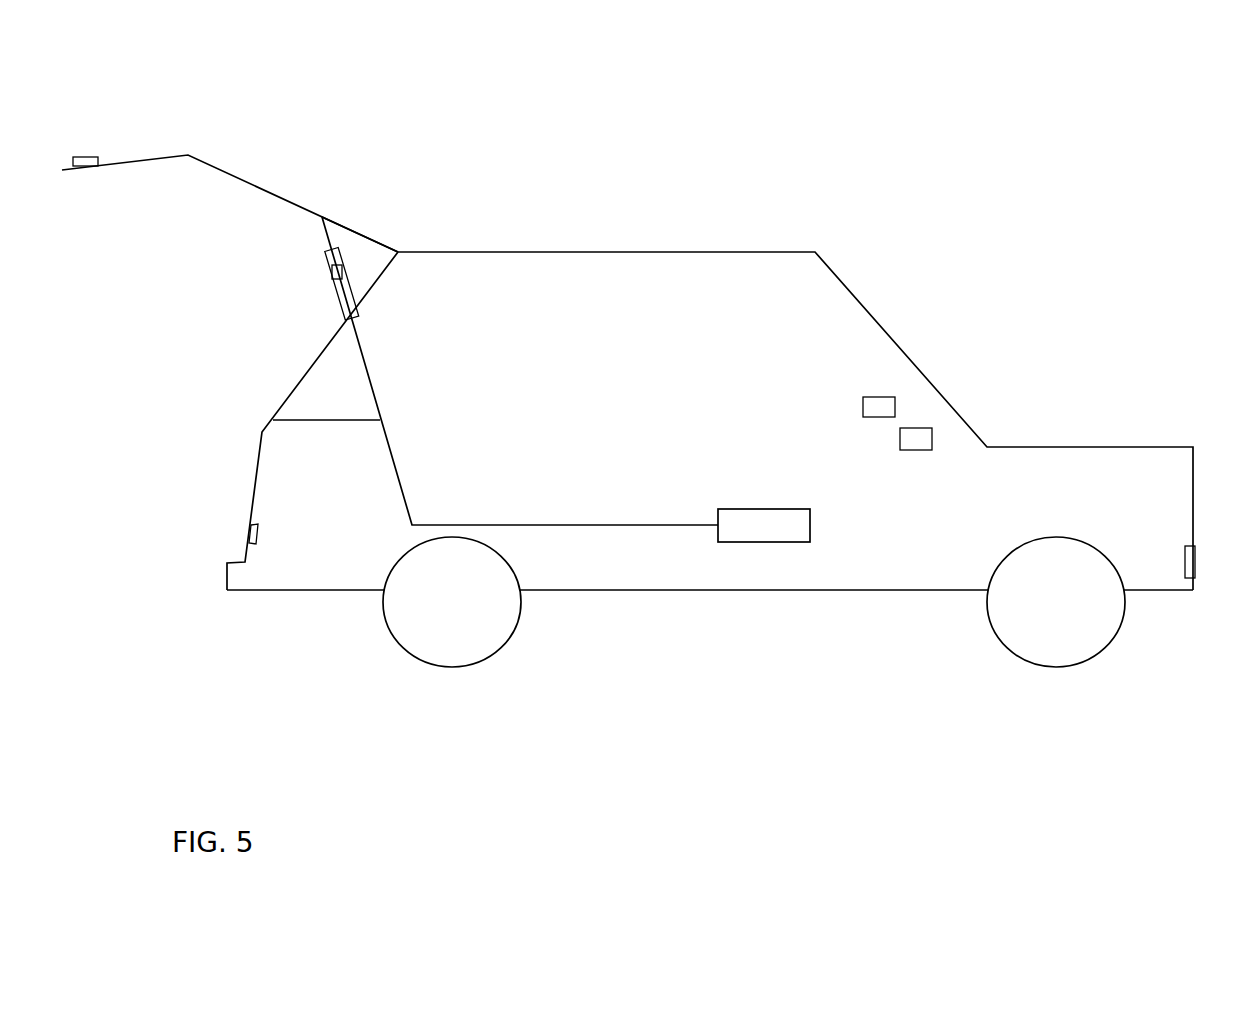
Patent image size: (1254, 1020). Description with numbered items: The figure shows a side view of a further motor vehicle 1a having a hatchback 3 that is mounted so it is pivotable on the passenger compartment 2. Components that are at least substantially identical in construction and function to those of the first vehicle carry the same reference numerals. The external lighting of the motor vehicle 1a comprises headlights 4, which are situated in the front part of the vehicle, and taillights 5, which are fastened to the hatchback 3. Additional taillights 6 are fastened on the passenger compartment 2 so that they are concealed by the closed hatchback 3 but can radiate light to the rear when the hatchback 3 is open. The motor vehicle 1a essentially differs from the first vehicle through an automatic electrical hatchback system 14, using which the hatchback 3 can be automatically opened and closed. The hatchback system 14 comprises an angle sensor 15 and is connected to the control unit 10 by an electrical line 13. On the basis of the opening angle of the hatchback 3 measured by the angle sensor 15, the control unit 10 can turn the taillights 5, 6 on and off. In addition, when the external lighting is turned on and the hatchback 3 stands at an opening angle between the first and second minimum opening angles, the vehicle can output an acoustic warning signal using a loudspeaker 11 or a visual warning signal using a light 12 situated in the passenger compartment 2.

The motor vehicle 1a is at (947, 256).
The passenger compartment 2 is at (299, 552).
The hatchback 3 is at (237, 175).
The headlights 4 is at (1190, 562).
The taillights 5 is at (78, 157).
The additional taillights 6 is at (251, 532).
The control unit 10 is at (762, 528).
The loudspeaker 11 is at (882, 405).
The light 12 is at (915, 437).
The electrical line 13 is at (273, 420).
The automatic electrical hatchback system 14 is at (347, 312).
The angle sensor 15 is at (332, 272).